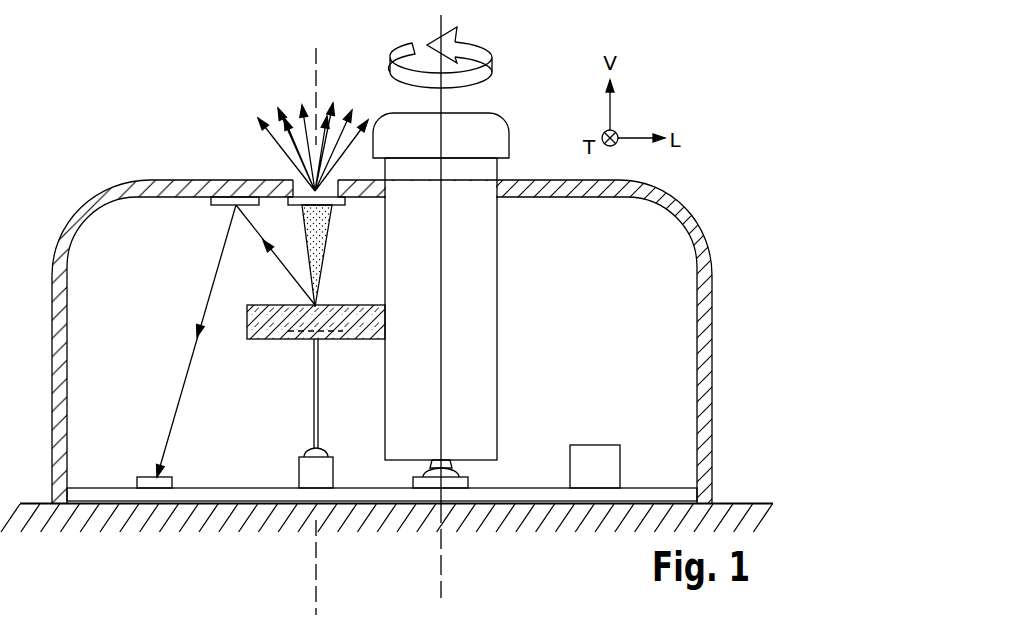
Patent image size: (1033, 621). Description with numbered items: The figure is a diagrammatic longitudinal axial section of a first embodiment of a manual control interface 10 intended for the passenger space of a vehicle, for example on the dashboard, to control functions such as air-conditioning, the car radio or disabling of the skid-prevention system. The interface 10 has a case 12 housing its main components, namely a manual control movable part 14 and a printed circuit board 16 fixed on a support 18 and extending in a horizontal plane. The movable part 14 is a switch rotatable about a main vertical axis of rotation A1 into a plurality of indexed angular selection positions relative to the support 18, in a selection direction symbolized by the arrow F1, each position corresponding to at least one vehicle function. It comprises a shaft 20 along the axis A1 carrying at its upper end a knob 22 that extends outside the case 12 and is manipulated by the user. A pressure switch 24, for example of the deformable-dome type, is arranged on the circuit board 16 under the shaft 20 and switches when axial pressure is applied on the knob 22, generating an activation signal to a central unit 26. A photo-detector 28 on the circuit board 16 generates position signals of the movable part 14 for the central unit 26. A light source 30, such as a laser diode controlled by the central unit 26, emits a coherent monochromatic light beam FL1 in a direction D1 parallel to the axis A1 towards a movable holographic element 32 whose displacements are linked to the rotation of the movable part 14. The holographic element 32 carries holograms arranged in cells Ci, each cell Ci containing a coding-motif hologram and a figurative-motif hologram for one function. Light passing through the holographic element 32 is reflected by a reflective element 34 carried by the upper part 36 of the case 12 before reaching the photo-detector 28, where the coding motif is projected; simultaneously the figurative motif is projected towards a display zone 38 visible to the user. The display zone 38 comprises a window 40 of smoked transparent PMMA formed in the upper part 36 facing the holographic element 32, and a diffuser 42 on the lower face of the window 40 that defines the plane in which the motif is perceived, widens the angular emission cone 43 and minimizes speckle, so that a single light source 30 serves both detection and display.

The manual control interface 10 is at (102, 112).
The case 12 is at (713, 241).
The manual control movable part 14 is at (543, 150).
The printed circuit board 16 is at (677, 486).
The support 18 is at (752, 503).
The shaft 20 is at (498, 392).
The knob 22 is at (508, 138).
The pressure switch 24 is at (472, 482).
The central unit 26 is at (594, 444).
The photo-detector 28 is at (142, 476).
The light source 30 is at (292, 440).
The movable holographic element 32 is at (265, 302).
The reflective element 34 is at (213, 213).
The upper part of the case 36 is at (167, 182).
The display zone 38 is at (290, 173).
The window 40 is at (340, 147).
The diffuser 42 is at (337, 205).
The angular emission cone 43 is at (285, 99).
The selection direction arrow F1 is at (440, 50).
The main vertical axis of rotation A1 is at (441, 573).
The light beam direction D1 is at (316, 527).
The cell Ci is at (295, 343).
The light beam FL1 is at (322, 377).